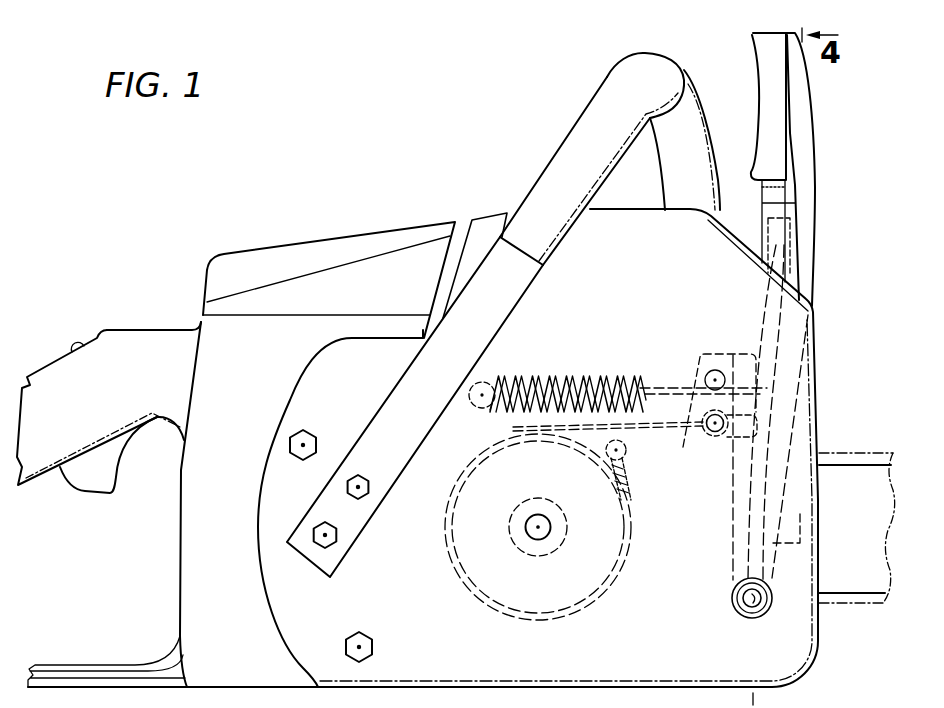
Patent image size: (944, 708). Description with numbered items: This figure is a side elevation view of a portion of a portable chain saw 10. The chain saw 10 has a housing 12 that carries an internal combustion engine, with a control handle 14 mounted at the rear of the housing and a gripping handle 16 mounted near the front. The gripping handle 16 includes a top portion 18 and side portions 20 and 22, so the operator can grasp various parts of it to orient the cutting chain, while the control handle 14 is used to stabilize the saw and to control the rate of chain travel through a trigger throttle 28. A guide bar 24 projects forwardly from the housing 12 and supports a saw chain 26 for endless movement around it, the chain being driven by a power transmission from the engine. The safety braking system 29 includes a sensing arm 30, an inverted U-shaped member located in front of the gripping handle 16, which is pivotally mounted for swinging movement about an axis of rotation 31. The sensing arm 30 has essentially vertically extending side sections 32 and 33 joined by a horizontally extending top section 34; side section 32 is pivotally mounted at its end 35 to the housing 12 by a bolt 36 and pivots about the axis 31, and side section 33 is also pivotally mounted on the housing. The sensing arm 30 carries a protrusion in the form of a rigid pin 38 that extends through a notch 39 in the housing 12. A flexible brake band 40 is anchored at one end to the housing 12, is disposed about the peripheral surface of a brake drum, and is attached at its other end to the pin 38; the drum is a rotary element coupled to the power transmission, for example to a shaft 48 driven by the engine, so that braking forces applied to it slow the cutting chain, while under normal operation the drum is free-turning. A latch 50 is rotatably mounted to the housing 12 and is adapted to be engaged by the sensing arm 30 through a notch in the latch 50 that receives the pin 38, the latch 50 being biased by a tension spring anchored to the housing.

The chain saw 10 is at (388, 195).
The housing 12 is at (490, 216).
The control handle 14 is at (140, 330).
The gripping handle 16 is at (607, 77).
The top portion 18 is at (697, 68).
The side portion 20 is at (523, 205).
The side portion 22 is at (665, 179).
The guide bar 24 is at (853, 595).
The saw chain 26 is at (868, 606).
The trigger throttle 28 is at (86, 496).
The safety braking system 29 is at (647, 352).
The sensing arm 30 is at (815, 132).
The axis of rotation 31 is at (752, 608).
The side section 32 is at (707, 482).
The side section 33 is at (800, 395).
The top section 34 is at (768, 27).
The end 35 is at (735, 588).
The bolt 36 is at (737, 609).
The rigid pin 38 is at (704, 428).
The notch 39 is at (733, 462).
The brake band 40 is at (547, 428).
The shaft 48 is at (525, 530).
The latch 50 is at (715, 354).